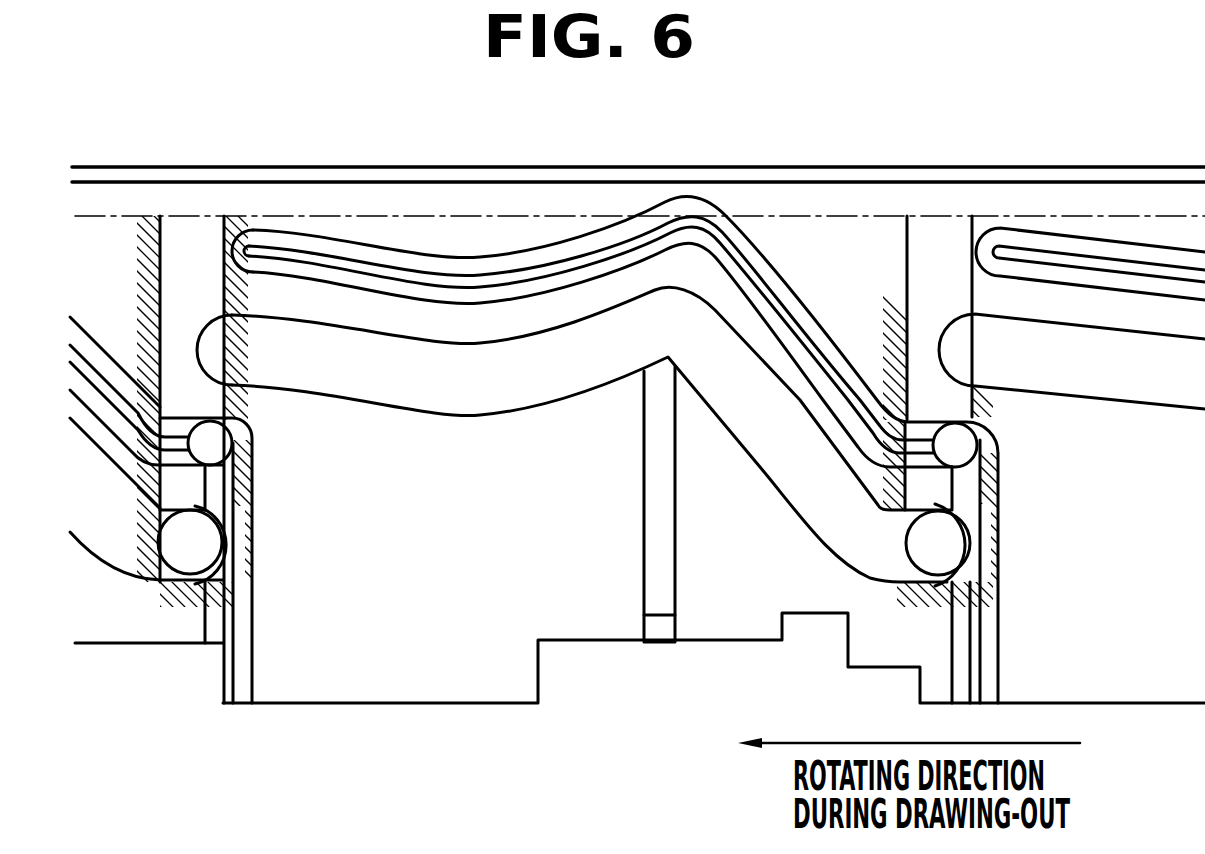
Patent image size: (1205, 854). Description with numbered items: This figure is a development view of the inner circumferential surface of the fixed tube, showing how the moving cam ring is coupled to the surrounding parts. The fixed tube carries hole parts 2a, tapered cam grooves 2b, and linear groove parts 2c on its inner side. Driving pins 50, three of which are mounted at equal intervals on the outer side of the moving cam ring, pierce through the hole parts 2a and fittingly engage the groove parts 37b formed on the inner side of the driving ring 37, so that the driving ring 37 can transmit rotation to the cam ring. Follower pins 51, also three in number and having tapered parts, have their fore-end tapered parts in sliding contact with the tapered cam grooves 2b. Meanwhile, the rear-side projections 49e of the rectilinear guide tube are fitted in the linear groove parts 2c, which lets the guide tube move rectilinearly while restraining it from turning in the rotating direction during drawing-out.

The hole part 2a is at (372, 363).
The tapered cam groove 2b is at (770, 253).
The linear groove part 2c is at (643, 540).
The driving ring 37 is at (853, 216).
The groove part 37b is at (913, 273).
The rear-side projection 49e is at (657, 643).
The driving pin 50 is at (940, 547).
The follower pin 51 is at (963, 443).